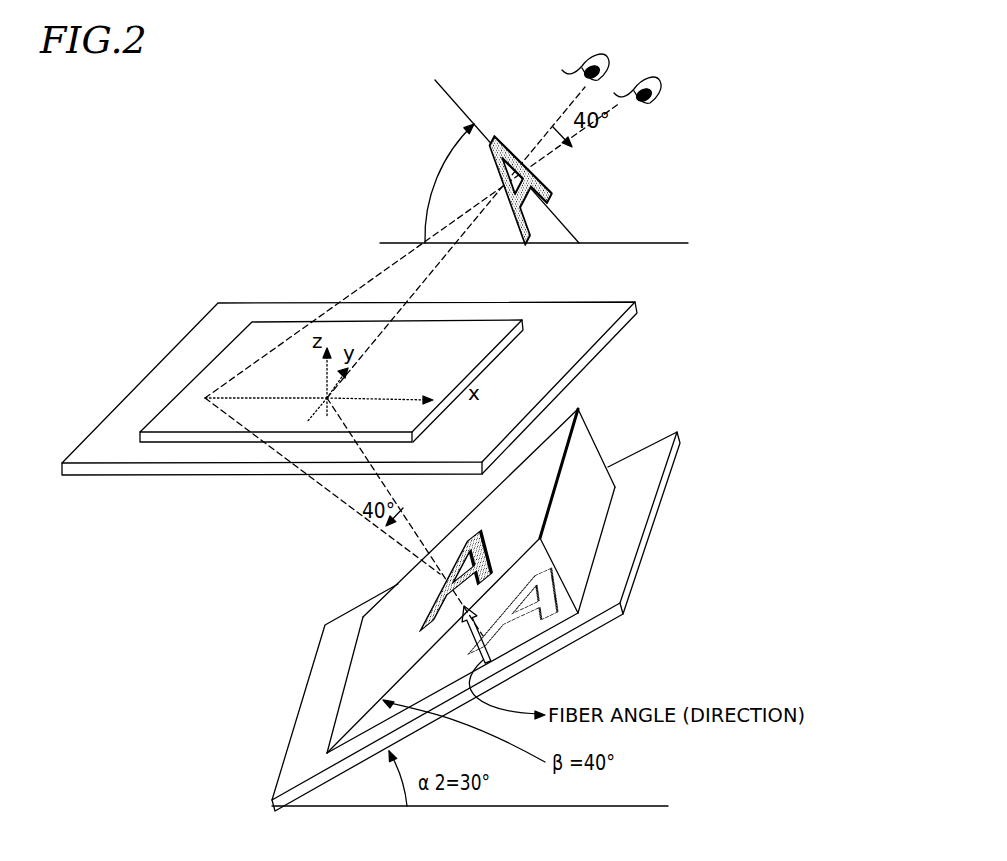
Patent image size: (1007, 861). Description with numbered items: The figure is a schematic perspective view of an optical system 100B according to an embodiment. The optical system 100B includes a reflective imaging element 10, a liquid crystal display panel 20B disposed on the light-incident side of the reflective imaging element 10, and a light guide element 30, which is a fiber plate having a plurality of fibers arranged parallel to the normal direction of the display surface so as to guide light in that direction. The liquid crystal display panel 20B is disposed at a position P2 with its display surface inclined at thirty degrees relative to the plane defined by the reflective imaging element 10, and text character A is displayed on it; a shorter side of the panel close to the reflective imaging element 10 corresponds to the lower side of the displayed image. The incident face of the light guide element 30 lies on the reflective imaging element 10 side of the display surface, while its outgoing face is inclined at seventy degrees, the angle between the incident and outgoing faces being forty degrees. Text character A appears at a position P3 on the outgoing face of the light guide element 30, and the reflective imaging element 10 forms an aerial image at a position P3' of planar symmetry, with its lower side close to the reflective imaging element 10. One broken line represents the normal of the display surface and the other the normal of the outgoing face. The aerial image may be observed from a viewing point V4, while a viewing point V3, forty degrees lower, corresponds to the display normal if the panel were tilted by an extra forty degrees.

The reflective imaging element 10 is at (633, 327).
The liquid crystal display panel 20B is at (690, 483).
The light guide element (fiber plate) 30 is at (582, 453).
The optical system 100B is at (720, 90).
The position of the liquid crystal display panel P2 is at (537, 622).
The position on the outgoing face of the light guide element P3 is at (415, 568).
The position of the aerial image P3' is at (515, 151).
The viewing point V3 is at (653, 78).
The viewing point V4 is at (600, 52).